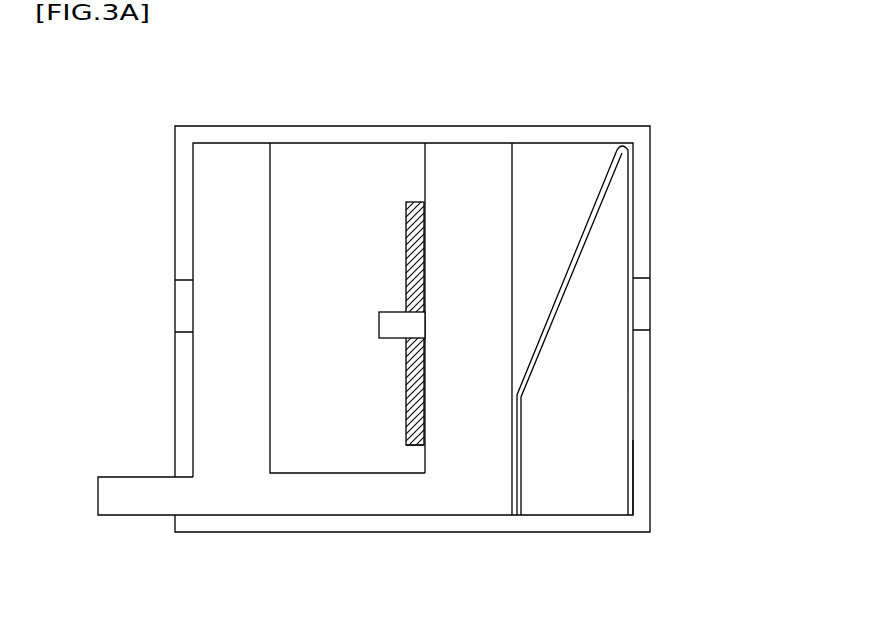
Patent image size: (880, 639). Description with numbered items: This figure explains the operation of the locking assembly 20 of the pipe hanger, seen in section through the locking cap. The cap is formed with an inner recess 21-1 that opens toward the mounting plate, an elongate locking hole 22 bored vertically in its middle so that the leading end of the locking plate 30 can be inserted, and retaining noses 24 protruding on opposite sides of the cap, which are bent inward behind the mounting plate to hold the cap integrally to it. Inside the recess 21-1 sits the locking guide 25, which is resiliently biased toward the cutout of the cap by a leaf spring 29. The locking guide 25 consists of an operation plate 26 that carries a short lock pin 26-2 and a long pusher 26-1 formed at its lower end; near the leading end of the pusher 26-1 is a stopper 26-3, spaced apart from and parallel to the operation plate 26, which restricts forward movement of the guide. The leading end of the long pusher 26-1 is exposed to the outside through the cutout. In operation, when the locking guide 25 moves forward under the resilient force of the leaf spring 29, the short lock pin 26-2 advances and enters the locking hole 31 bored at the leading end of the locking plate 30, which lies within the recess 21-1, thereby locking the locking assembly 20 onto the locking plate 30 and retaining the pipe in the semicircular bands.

The locking assembly 20 is at (682, 92).
The inner recess 21-1 is at (562, 180).
The elongate locking hole 22 is at (411, 447).
The retaining noses 24 is at (180, 303).
The locking guide 25 is at (220, 568).
The operation plate 26 is at (485, 175).
The long pusher 26-1 is at (108, 473).
The short lock pin 26-2 is at (392, 310).
The stopper 26-3 is at (258, 168).
The leaf spring 29 is at (630, 488).
The locking plate 30 is at (408, 447).
The locking hole 31 is at (421, 316).